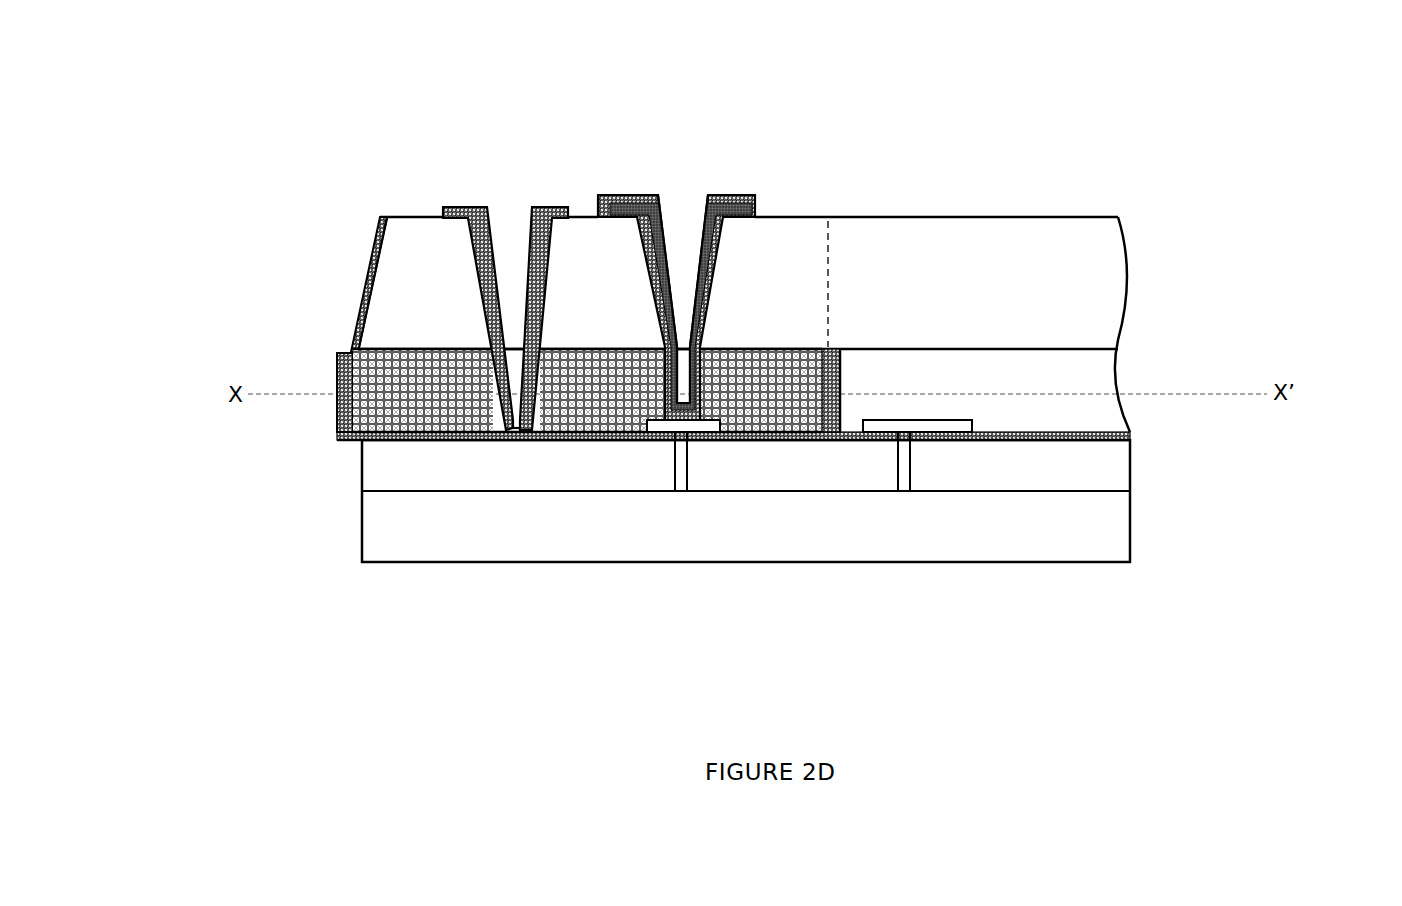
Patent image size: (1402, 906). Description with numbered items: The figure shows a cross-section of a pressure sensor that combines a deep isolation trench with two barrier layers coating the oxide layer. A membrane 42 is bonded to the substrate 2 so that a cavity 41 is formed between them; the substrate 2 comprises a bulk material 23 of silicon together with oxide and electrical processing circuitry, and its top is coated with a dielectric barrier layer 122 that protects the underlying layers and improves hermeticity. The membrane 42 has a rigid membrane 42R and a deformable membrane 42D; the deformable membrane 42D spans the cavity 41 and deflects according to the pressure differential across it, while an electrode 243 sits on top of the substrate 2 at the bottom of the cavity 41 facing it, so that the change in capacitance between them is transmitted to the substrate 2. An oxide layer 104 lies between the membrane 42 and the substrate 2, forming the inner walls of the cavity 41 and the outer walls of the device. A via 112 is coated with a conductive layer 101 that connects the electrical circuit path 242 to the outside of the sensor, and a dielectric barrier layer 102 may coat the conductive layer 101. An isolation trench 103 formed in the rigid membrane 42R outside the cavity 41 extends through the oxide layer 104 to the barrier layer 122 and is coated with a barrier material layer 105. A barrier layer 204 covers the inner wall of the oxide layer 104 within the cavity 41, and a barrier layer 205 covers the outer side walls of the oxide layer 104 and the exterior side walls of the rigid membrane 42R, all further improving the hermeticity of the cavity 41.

The substrate 2 is at (1132, 432).
The bulk material 23 is at (759, 551).
The cavity 41 is at (979, 390).
The membrane 42 is at (1153, 278).
The deformable membrane 42D is at (1001, 310).
The rigid membrane 42R is at (748, 278).
The conductive layer 101 is at (648, 210).
The barrier layer 102 is at (747, 200).
The isolation trench 103 is at (515, 220).
The oxide layer 104 is at (785, 415).
The barrier material layer 105 is at (385, 218).
The via 112 is at (705, 183).
The barrier layer 122 is at (407, 438).
The barrier layer 204 is at (835, 410).
The barrier layer 205 is at (350, 385).
The electrical circuit path 242 is at (907, 487).
The electrode 243 is at (958, 426).